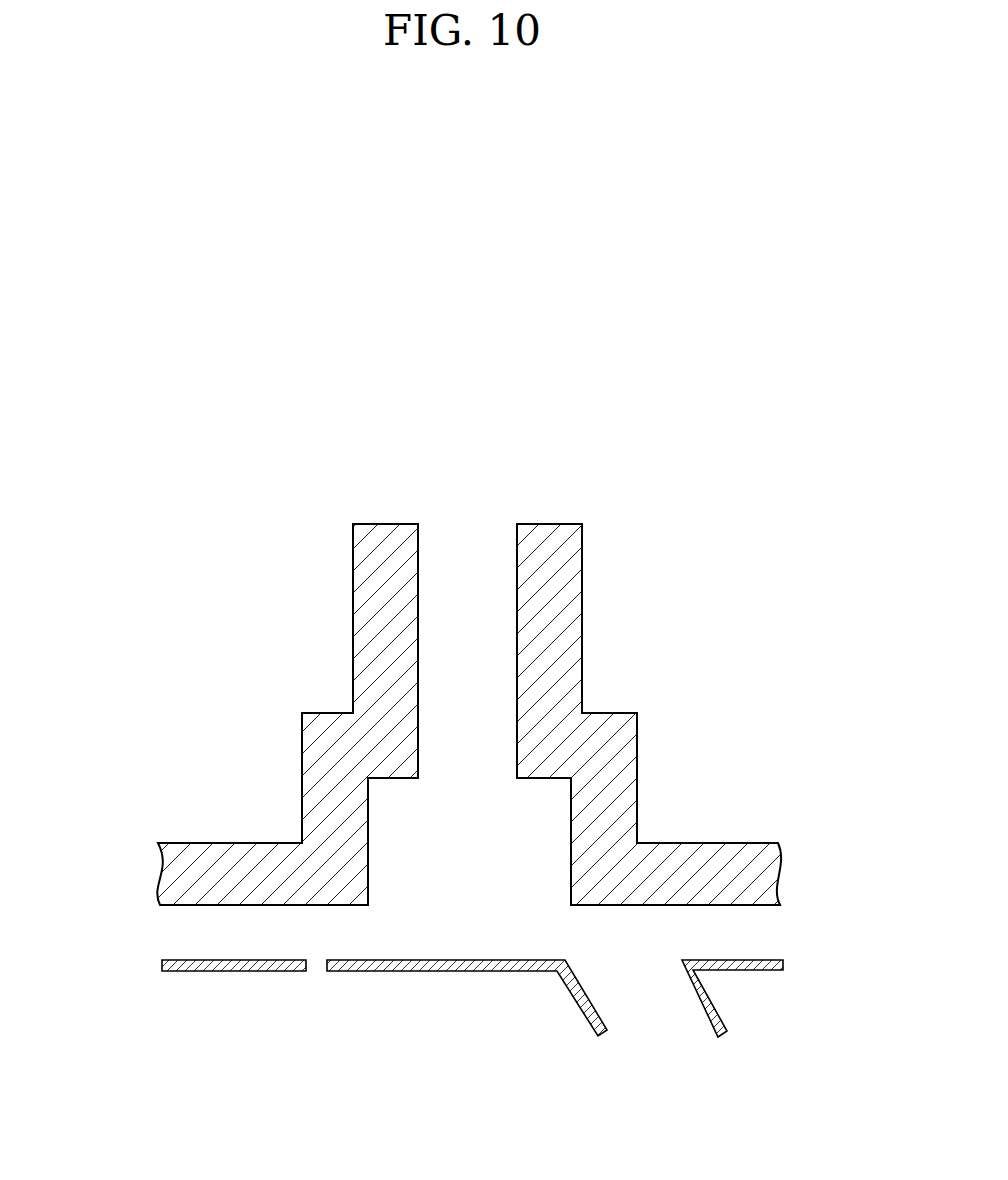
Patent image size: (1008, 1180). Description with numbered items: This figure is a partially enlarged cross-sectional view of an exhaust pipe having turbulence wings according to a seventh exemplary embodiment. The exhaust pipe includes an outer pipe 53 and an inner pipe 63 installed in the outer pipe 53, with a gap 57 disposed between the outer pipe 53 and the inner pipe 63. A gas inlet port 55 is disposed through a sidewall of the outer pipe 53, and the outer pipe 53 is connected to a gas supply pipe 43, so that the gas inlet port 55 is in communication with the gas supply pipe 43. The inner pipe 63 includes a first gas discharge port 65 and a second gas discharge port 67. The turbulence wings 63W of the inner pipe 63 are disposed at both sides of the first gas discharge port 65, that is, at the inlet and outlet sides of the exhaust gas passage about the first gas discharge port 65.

The gas supply pipe 43 is at (567, 645).
The outer pipe 53 is at (210, 856).
The gas inlet port 55 is at (475, 830).
The gap 57 is at (199, 929).
The inner pipe 63 is at (192, 968).
The turbulence wings 63W is at (588, 1012).
The first gas discharge port 65 is at (626, 991).
The second gas discharge port 67 is at (318, 967).